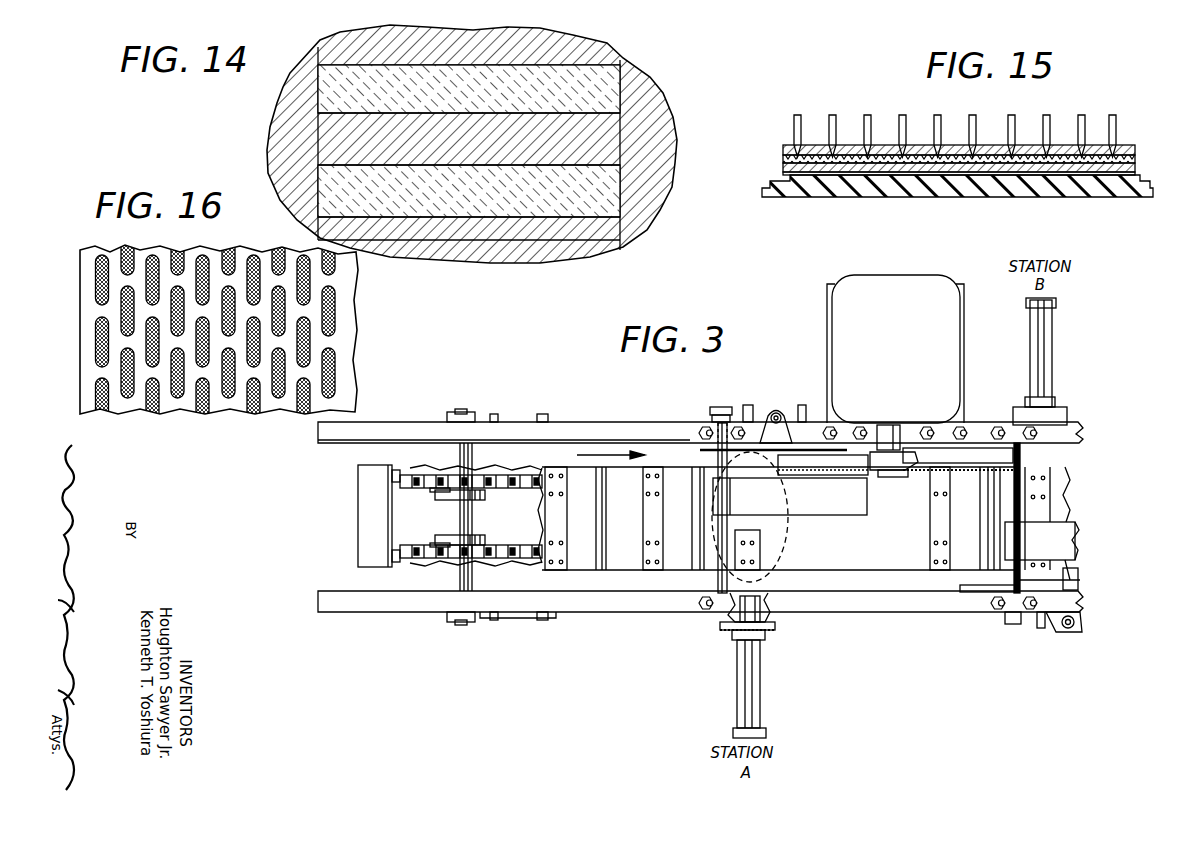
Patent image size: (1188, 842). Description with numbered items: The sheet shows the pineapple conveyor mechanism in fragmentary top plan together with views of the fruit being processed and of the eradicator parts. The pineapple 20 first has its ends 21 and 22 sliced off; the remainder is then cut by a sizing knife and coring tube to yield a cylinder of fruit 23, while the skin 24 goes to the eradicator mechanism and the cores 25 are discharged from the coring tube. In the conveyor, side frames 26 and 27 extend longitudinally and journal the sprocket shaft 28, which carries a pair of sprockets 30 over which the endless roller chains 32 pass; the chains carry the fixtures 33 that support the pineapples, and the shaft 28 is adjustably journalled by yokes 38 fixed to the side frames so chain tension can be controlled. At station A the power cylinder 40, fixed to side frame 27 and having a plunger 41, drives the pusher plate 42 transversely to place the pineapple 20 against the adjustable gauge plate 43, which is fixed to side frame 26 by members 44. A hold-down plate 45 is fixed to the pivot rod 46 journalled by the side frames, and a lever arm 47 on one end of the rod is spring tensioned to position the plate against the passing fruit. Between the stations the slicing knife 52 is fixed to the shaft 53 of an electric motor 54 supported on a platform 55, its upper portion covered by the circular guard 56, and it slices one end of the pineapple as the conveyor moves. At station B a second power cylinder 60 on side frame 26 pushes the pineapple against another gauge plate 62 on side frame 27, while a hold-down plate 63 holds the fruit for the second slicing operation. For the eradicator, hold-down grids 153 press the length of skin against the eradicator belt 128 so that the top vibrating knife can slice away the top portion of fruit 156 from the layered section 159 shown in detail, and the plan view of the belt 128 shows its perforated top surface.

In FIG. 14, the pineapple 20 is at (322, 36).
In FIG. 3, the pineapple 20 is at (773, 540).
In FIG. 14, the end of pineapple 21 is at (290, 98).
In FIG. 14, the end of pineapple 22 is at (660, 144).
In FIG. 14, the cylinder of fruit 23 is at (571, 205).
In FIG. 14, the skin 24 is at (503, 246).
In FIG. 14, the cores 25 is at (512, 125).
In FIG. 15, the hold-down grids 153 is at (832, 104).
In FIG. 15, the laminated plate 159 is at (1026, 145).
In FIG. 15, the top portion of fruit 156 is at (1127, 146).
In FIG. 15, the eradicator belt 128 is at (1026, 198).
In FIG. 16, the eradicator belt 128 is at (236, 400).
In FIG. 3, the side frame 26 is at (594, 433).
In FIG. 3, the side frame 27 is at (638, 614).
In FIG. 3, the sprocket shaft 28 is at (465, 579).
In FIG. 3, the sprockets 30 is at (420, 545).
In FIG. 3, the endless roller chains 32 is at (427, 550).
In FIG. 3, the fixtures 33 is at (370, 495).
In FIG. 3, the yokes 38 is at (540, 618).
In FIG. 3, the power cylinder 40 is at (750, 672).
In FIG. 3, the plunger 41 is at (732, 626).
In FIG. 3, the pusher plate 42 is at (765, 594).
In FIG. 3, the gauge plate 43 is at (822, 452).
In FIG. 3, the members 44 is at (801, 405).
In FIG. 3, the hold-down plate 45 is at (747, 493).
In FIG. 3, the pivot rod 46 is at (717, 581).
In FIG. 3, the lever arm 47 is at (761, 440).
In FIG. 3, the slicing knife 52 is at (970, 463).
In FIG. 3, the shaft 53 is at (896, 424).
In FIG. 3, the electric motor 54 is at (903, 297).
In FIG. 3, the platform 55 is at (830, 292).
In FIG. 3, the circular guard 56 is at (935, 455).
In FIG. 3, the power cylinder 60 is at (1045, 380).
In FIG. 3, the gauge plate 62 is at (998, 588).
In FIG. 3, the hold-down plate 63 is at (1058, 538).